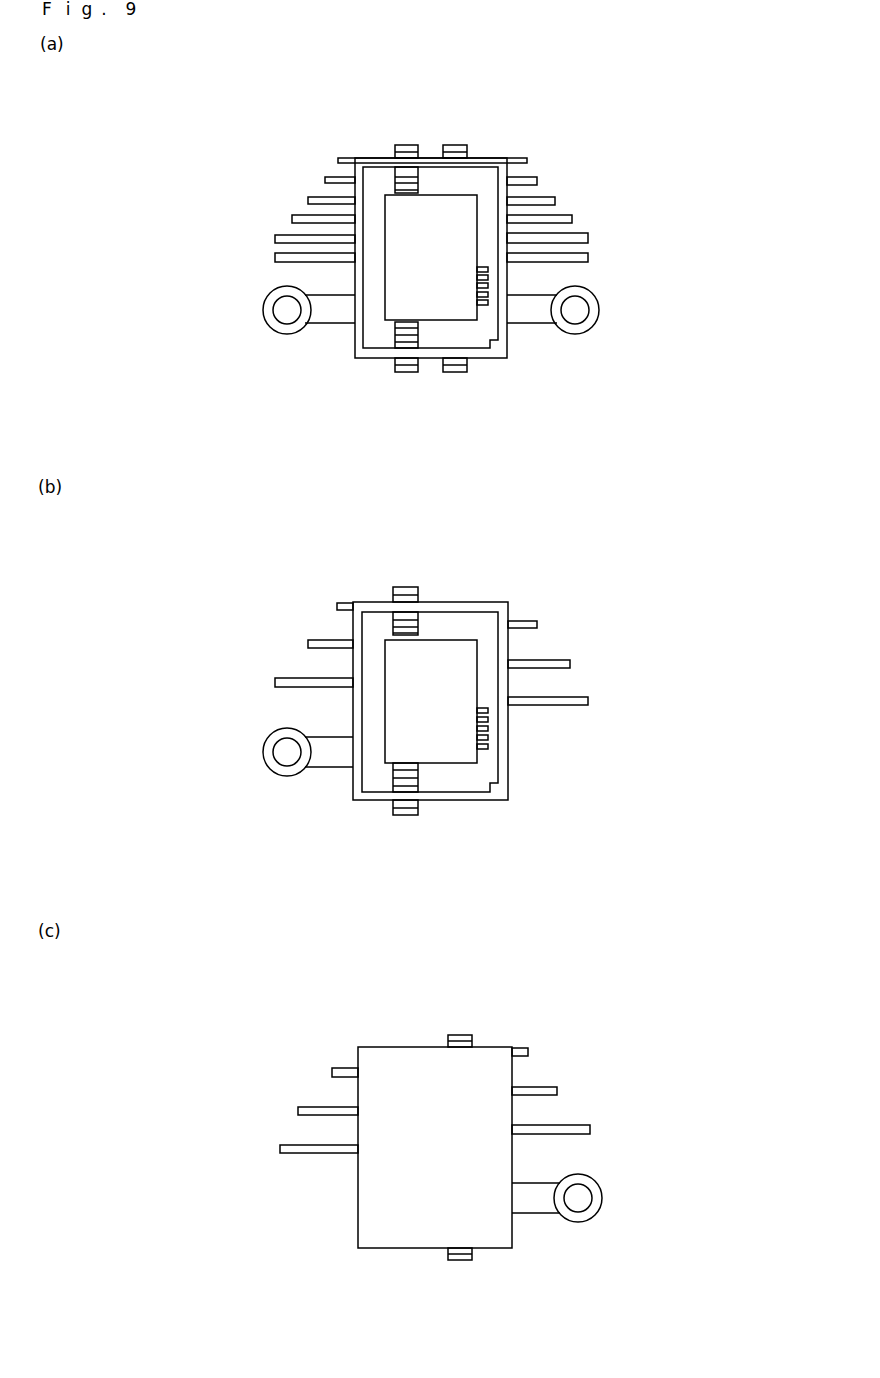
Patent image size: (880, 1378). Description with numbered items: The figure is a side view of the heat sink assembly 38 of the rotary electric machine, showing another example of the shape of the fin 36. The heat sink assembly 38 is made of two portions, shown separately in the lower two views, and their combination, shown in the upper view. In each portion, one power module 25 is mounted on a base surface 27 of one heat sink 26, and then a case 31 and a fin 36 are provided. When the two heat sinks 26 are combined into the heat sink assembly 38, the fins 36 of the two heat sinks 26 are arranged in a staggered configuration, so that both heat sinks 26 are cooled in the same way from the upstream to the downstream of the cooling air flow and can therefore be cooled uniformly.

The power module 25 is at (445, 250).
The heat sink 26 is at (336, 176).
The base surface 27 is at (468, 182).
The case 31 is at (348, 335).
The fin 36 is at (307, 213).
The heat sink assembly 38 is at (354, 151).